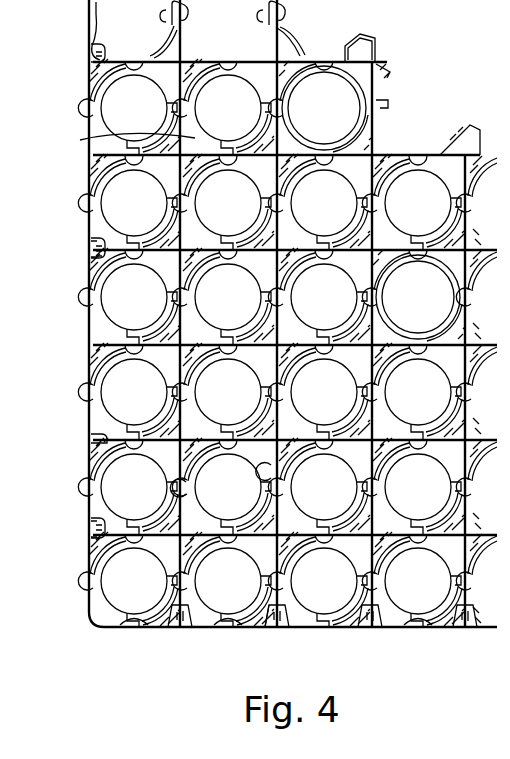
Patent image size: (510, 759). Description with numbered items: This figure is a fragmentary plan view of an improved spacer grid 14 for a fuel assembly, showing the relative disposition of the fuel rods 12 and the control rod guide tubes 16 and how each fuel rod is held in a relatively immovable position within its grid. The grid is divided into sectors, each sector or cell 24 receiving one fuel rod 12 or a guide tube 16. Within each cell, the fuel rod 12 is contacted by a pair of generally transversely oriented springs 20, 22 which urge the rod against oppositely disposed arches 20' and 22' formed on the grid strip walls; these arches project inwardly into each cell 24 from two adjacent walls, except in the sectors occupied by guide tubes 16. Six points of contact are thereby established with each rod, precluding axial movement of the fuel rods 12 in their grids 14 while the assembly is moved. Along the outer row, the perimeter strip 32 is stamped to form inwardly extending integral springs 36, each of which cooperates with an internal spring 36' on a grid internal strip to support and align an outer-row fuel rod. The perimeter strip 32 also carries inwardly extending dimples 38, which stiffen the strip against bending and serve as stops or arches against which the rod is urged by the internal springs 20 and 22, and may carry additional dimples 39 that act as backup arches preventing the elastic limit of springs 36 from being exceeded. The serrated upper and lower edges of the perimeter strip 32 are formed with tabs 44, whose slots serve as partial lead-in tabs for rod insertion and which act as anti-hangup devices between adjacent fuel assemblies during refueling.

The fuel rod 12 is at (271, 343).
The spacer grid 14 is at (86, 69).
The guide tube 16 is at (366, 201).
The spring 20 is at (107, 481).
The arch 20' is at (149, 462).
The spring 22 is at (64, 521).
The arch 22' is at (70, 433).
The cell 24 is at (80, 140).
The perimeter strip 32 is at (88, 392).
The integral spring 36 is at (227, 648).
The internal spring 36' is at (277, 641).
The dimple 38 is at (140, 628).
The dimple 39 is at (413, 628).
The tab 44 is at (92, 254).